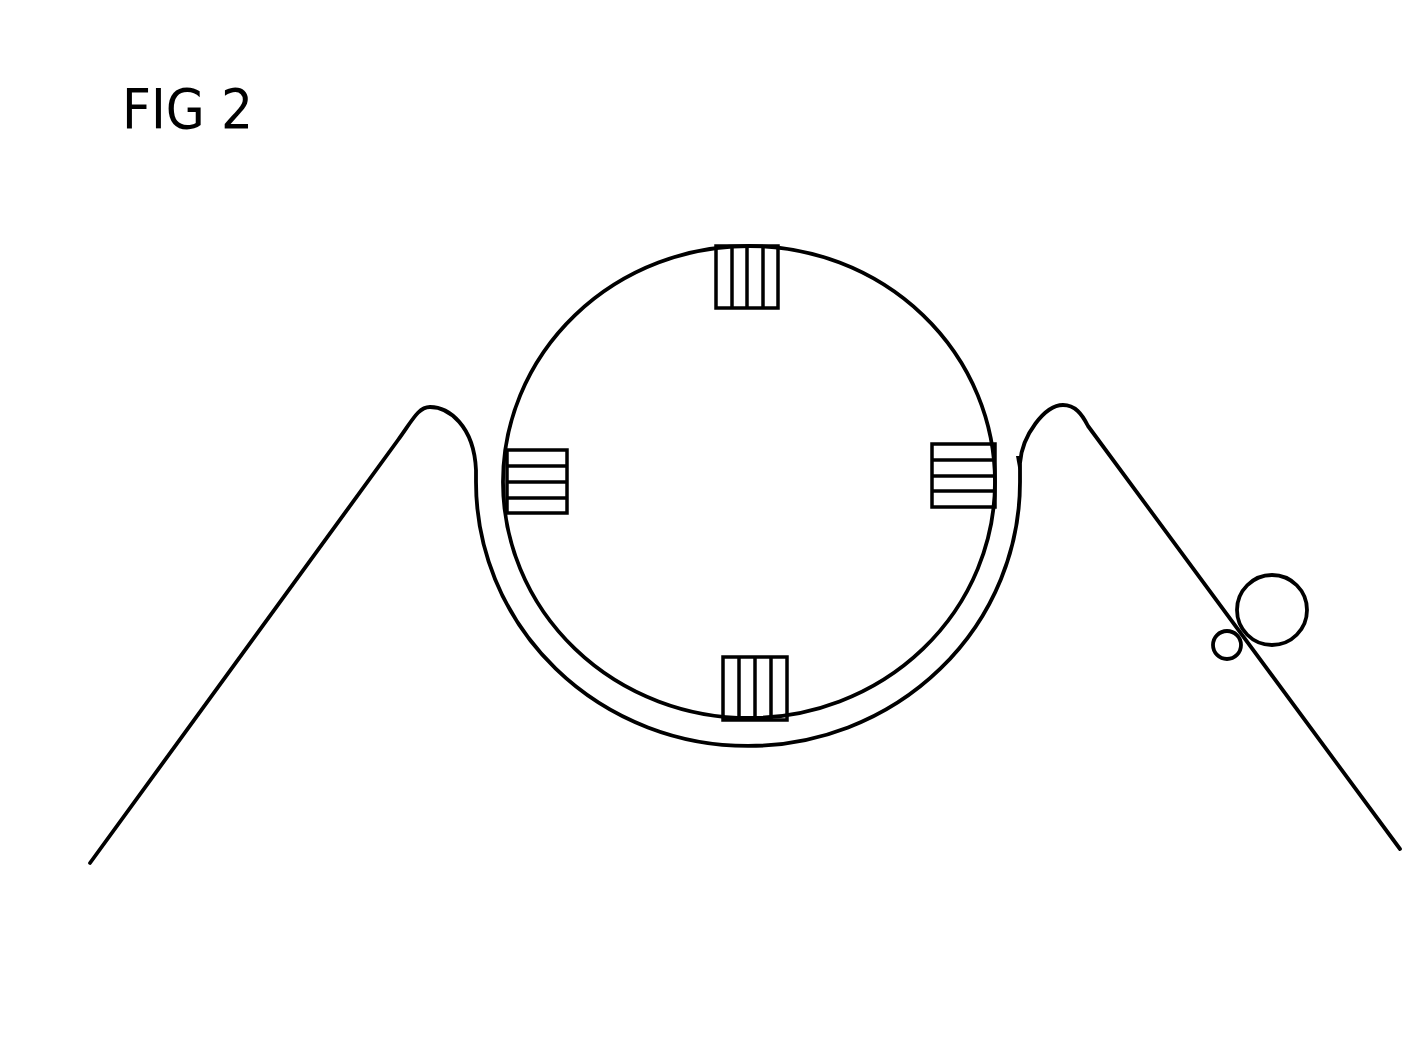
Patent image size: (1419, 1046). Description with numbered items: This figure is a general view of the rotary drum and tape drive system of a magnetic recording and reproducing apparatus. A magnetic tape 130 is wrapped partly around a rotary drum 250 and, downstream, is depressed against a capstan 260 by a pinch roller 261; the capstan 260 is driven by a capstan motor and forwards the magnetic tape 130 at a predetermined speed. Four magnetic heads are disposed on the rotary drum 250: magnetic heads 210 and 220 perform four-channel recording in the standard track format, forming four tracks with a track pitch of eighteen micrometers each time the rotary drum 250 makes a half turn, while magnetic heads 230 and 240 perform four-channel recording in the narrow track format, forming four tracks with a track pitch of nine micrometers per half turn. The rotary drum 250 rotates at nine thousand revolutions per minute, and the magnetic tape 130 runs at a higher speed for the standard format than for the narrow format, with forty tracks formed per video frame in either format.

The magnetic tape 130 is at (223, 715).
The magnetic head 210 is at (747, 247).
The magnetic head 220 is at (757, 723).
The magnetic head 230 is at (503, 465).
The magnetic head 240 is at (998, 450).
The rotary drum 250 is at (920, 305).
The capstan 260 is at (1208, 655).
The pinch roller 261 is at (1272, 565).